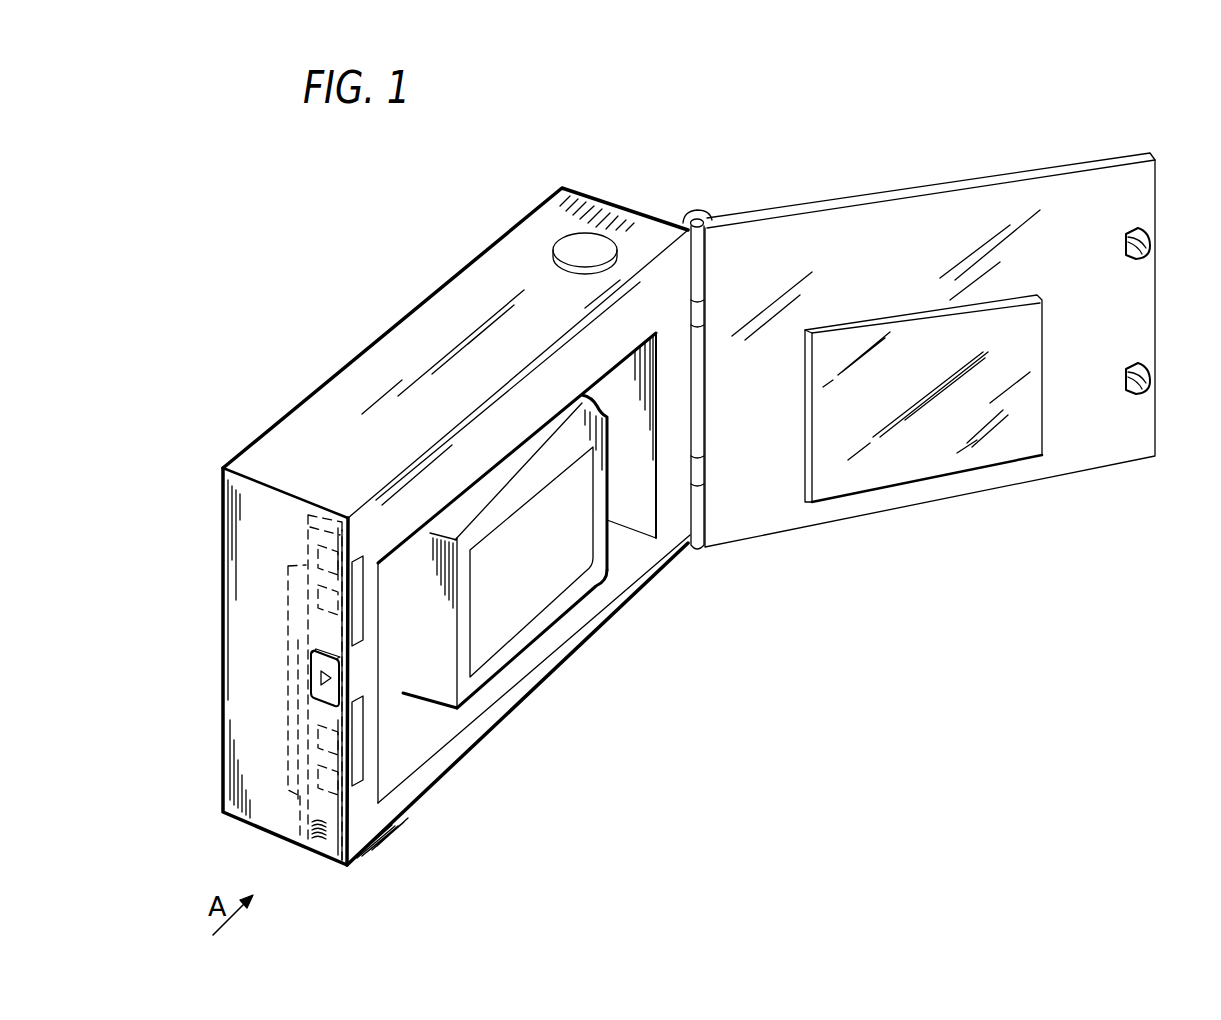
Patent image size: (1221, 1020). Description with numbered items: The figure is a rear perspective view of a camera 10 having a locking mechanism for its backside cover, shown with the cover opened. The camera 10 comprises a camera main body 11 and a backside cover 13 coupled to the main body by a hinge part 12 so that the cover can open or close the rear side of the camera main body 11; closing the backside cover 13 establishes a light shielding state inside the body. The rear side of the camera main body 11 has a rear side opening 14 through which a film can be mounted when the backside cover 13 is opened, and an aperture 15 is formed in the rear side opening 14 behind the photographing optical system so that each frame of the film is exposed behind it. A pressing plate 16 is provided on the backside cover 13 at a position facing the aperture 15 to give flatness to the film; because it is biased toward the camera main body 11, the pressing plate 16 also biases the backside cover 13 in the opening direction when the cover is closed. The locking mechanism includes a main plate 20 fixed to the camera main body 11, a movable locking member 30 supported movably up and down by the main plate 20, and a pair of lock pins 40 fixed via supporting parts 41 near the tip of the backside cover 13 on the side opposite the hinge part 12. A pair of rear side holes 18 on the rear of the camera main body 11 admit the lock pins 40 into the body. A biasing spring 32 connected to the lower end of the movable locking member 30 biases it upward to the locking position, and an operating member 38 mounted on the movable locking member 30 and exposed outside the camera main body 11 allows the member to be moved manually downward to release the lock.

The camera 10 is at (357, 296).
The camera main body 11 is at (622, 206).
The hinge part 12 is at (697, 212).
The backside cover 13 is at (838, 222).
The rear side opening 14 is at (573, 604).
The aperture 15 is at (583, 515).
The pressing plate 16 is at (962, 450).
The rear side holes 18 is at (364, 605).
The main plate 20 is at (290, 600).
The movable locking member 30 is at (298, 652).
The biasing spring 32 is at (316, 842).
The operating member 38 is at (312, 676).
The lock pins 40 is at (1152, 246).
The supporting parts 41 is at (1123, 248).